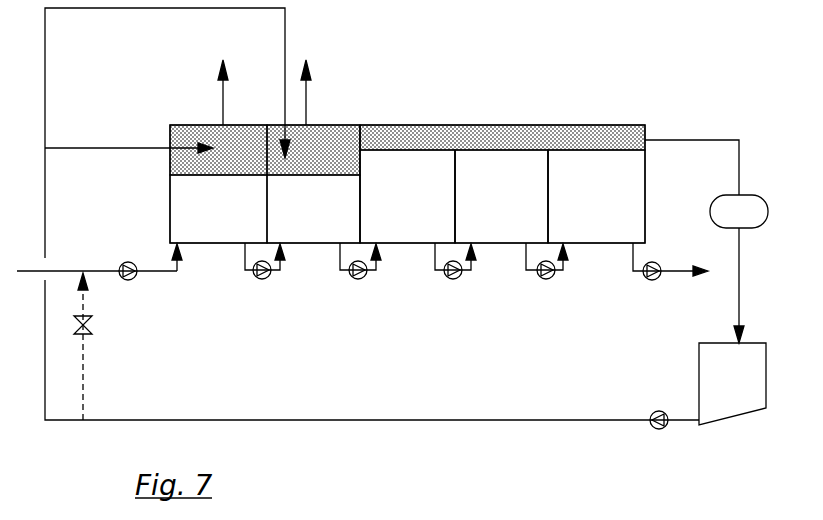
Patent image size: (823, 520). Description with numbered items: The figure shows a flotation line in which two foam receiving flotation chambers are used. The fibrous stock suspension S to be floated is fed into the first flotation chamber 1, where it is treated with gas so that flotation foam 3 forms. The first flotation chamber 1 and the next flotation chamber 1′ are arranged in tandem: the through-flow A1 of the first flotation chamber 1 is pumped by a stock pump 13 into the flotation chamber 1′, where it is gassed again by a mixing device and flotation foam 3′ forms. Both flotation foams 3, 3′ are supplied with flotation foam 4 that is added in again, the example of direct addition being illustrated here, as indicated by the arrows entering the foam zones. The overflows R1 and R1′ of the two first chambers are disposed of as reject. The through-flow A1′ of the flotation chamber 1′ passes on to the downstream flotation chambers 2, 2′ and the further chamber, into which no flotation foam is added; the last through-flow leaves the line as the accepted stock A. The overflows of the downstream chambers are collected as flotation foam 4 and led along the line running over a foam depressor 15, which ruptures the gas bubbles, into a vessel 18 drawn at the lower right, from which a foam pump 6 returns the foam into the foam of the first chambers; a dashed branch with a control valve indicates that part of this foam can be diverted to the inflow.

The first flotation chamber 1 is at (220, 220).
The second flotation chamber operated in tandem 1′ is at (325, 219).
The additional flotation chamber 2 is at (414, 219).
The additional flotation chamber 2′ is at (512, 219).
The flotation foam 3 is at (200, 165).
The flotation foam 3′ is at (340, 165).
The flotation foam 4 is at (580, 125).
The foam pump 6 is at (650, 413).
The stock pump 13 is at (268, 279).
The foam depressor 15 is at (730, 210).
The collection vessel 18 is at (732, 384).
The accepted stock A is at (676, 278).
The through-flow A1 is at (245, 272).
The through-flow A1′ is at (345, 280).
The overflow R1 is at (215, 68).
The overflow R1′ is at (309, 62).
The fibrous stock suspension S is at (155, 273).